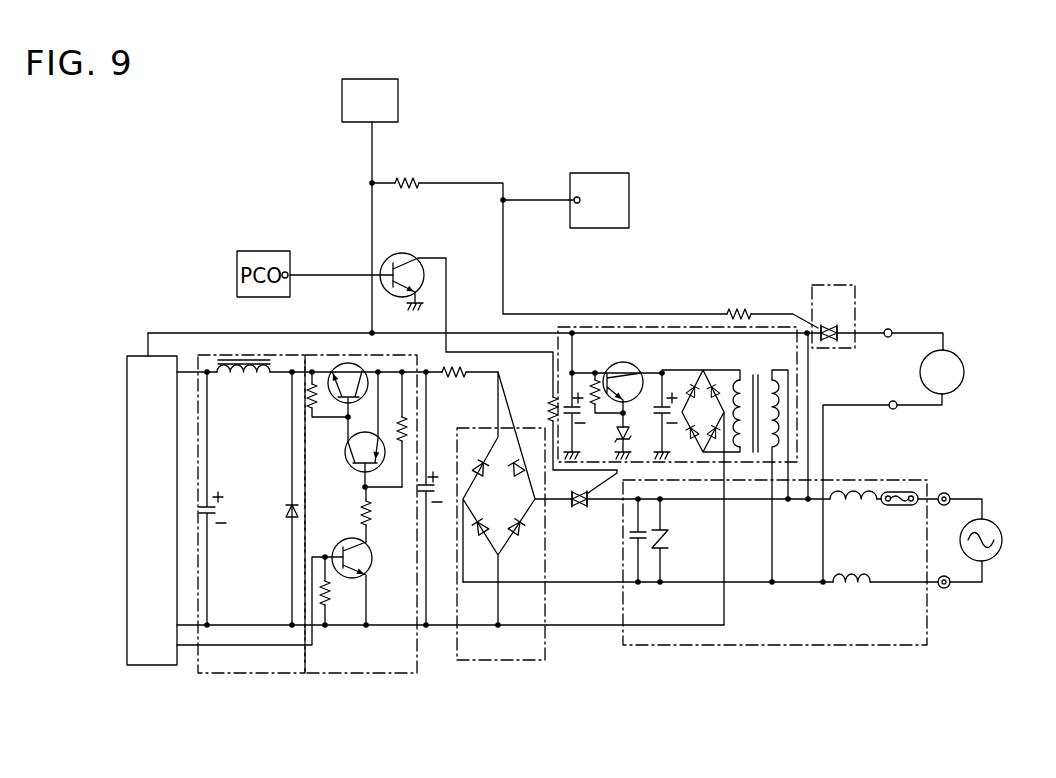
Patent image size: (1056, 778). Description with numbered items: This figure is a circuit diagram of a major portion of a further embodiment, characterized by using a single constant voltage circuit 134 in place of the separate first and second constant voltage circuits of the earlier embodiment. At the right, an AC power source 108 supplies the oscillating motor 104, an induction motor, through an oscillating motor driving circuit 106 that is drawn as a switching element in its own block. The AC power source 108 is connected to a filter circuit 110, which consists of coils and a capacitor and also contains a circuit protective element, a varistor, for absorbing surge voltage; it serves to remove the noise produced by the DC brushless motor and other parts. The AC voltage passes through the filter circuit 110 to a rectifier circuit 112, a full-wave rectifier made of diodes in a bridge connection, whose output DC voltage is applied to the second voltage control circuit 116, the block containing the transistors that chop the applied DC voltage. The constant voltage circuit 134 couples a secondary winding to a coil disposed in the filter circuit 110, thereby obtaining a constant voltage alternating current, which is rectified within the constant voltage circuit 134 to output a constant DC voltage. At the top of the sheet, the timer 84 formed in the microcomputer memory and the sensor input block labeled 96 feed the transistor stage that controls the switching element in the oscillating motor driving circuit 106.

The timer 84 is at (390, 103).
The photoelectric sensor PE3 96 is at (622, 173).
The oscillating motor 104 is at (961, 359).
The oscillating motor driving circuit 106 is at (849, 286).
The AC power source 108 is at (997, 532).
The filter circuit 110 is at (929, 633).
The rectifier circuit 112 is at (270, 673).
The second voltage control circuit 116 is at (403, 673).
The constant voltage circuit 134 is at (647, 327).